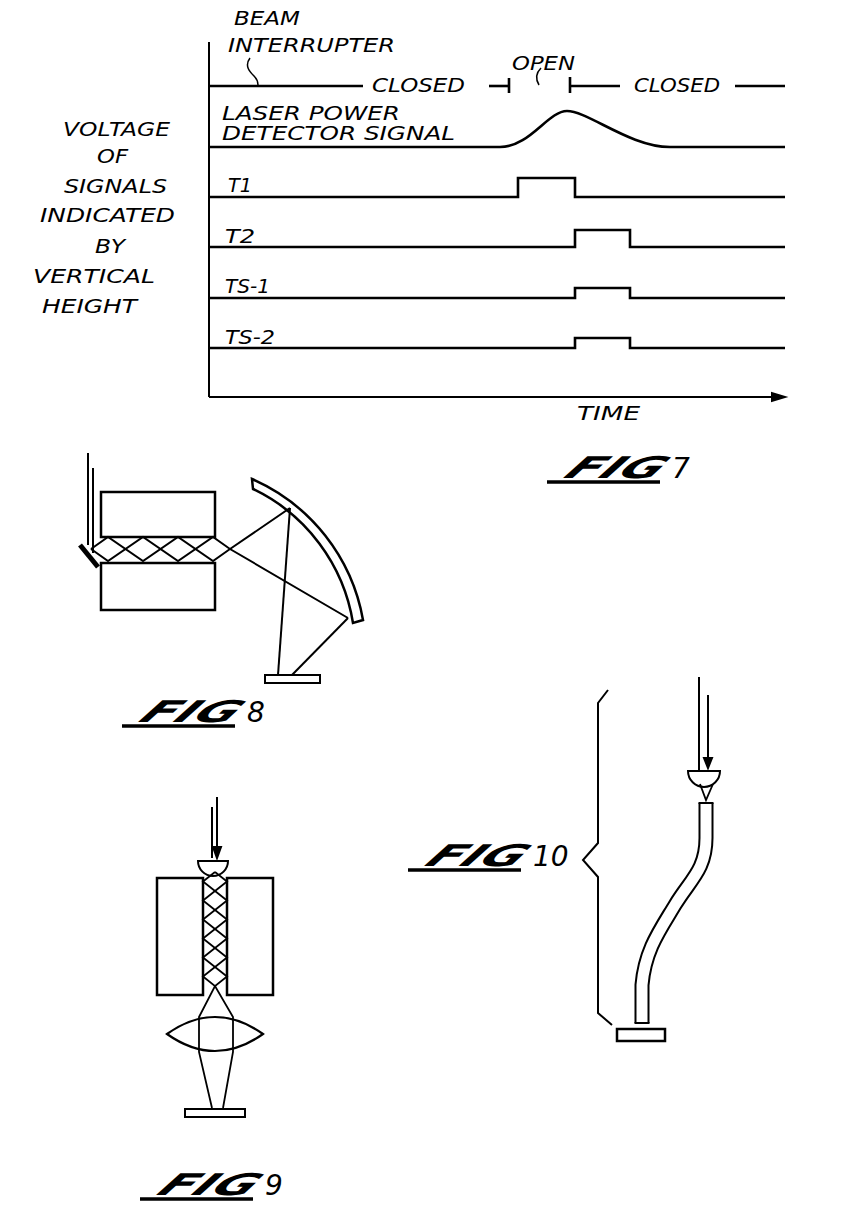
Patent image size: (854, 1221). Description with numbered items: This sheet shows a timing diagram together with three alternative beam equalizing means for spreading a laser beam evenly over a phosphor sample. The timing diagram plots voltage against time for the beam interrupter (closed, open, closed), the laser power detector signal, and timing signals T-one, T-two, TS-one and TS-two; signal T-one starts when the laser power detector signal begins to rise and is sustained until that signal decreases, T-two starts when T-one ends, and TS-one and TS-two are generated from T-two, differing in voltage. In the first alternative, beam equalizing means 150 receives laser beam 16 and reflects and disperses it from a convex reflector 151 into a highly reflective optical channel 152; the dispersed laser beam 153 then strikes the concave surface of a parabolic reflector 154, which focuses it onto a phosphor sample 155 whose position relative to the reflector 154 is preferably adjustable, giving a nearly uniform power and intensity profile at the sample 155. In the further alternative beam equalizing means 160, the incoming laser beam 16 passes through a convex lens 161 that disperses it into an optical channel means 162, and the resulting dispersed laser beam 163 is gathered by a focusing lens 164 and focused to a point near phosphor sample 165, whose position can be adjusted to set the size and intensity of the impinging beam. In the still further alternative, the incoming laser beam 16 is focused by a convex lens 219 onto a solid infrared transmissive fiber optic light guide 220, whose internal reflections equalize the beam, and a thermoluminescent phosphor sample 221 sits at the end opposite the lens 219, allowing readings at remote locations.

In FIG. 8, the laser beam 16 is at (97, 477).
In FIG. 9, the laser beam 16 is at (222, 843).
In FIG. 10, the laser beam 16 is at (712, 723).
In FIG. 8, the beam equalizing means 150 is at (322, 498).
In FIG. 8, the convex reflector 151 is at (83, 563).
In FIG. 8, the optical channel 152 is at (155, 518).
In FIG. 8, the dispersed laser beam 153 is at (128, 556).
In FIG. 8, the parabolic reflector 154 is at (353, 563).
In FIG. 8, the phosphor sample 155 is at (320, 675).
In FIG. 9, the beam equalizing means 160 is at (140, 935).
In FIG. 9, the convex lens 161 is at (222, 868).
In FIG. 9, the optical channel means 162 is at (254, 933).
In FIG. 9, the dispersed laser beam 163 is at (220, 1007).
In FIG. 9, the focusing lens 164 is at (248, 1035).
In FIG. 9, the phosphor sample 165 is at (235, 1118).
In FIG. 10, the convex lens 219 is at (689, 778).
In FIG. 10, the fiber optic light guide 220 is at (692, 850).
In FIG. 10, the thermoluminescent phosphor sample 221 is at (665, 1035).